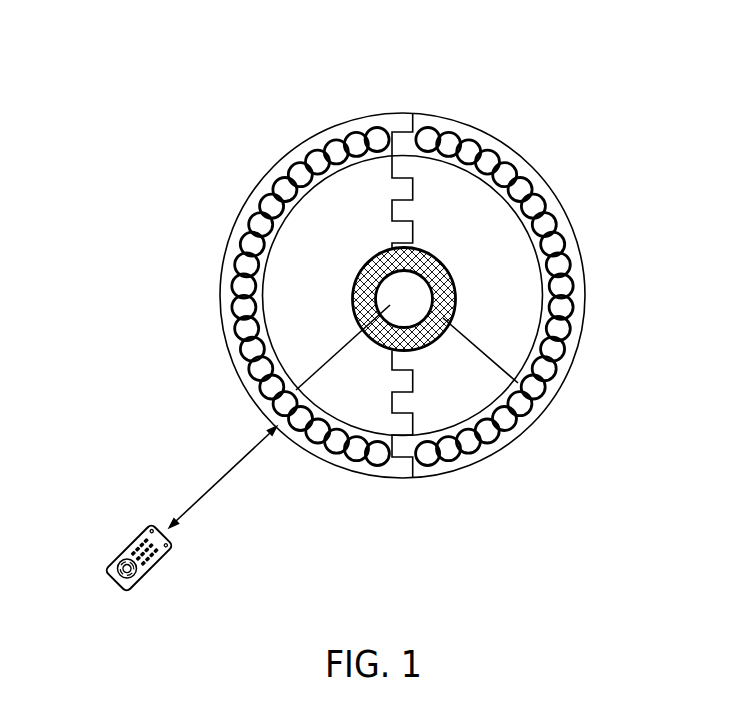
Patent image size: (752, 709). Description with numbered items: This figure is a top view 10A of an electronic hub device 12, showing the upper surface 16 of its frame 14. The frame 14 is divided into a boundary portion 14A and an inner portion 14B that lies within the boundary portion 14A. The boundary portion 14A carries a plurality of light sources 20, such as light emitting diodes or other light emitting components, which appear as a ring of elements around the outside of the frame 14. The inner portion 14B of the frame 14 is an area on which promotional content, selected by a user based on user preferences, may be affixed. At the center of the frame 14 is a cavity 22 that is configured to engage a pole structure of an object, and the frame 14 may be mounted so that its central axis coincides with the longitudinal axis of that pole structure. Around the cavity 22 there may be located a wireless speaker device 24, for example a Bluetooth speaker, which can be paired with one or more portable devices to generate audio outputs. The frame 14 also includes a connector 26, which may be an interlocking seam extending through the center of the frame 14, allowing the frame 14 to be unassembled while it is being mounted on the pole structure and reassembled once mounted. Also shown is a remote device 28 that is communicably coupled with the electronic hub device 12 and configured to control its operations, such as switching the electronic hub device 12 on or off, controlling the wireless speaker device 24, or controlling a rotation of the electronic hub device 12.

The top view 10A is at (147, 100).
The electronic hub device 12 is at (367, 117).
The frame 14 is at (498, 220).
The boundary portion 14A is at (572, 261).
The inner portion 14B is at (272, 287).
The upper surface 16 is at (298, 225).
The light sources 20 is at (233, 325).
The cavity 22 is at (265, 377).
The wireless speaker device 24 is at (542, 378).
The connector 26 is at (465, 454).
The remote device 28 is at (133, 538).